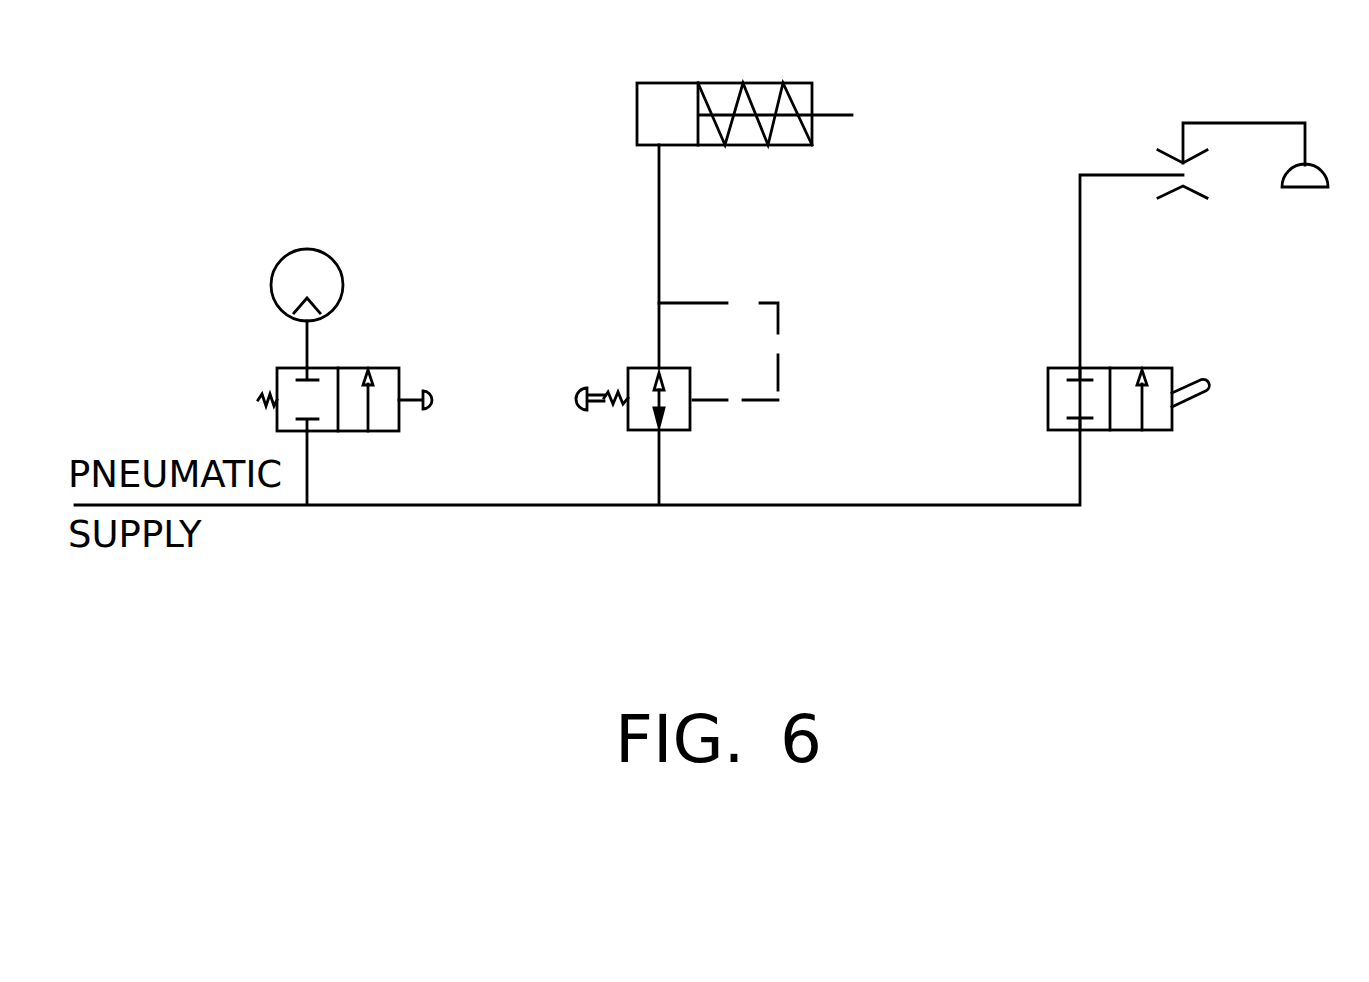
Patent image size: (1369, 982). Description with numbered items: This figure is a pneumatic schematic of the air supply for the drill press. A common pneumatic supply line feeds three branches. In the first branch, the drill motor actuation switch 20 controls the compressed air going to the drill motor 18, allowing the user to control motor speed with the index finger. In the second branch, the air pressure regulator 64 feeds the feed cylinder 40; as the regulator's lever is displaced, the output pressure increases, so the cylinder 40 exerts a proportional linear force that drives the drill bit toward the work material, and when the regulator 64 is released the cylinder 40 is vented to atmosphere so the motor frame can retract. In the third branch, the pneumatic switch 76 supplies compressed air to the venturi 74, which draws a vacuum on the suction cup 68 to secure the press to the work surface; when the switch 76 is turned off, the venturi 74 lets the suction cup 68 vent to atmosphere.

The drill motor 18 is at (307, 285).
The drill motor actuation switch 20 is at (322, 399).
The feed cylinder 40 is at (744, 88).
The air pressure regulator 64 is at (672, 366).
The suction cup 68 is at (1323, 160).
The venturi 74 is at (1211, 160).
The pneumatic switch 76 is at (1128, 375).